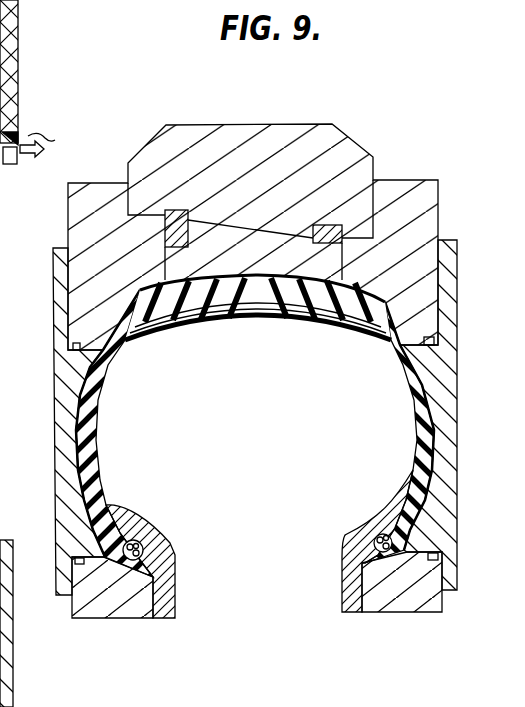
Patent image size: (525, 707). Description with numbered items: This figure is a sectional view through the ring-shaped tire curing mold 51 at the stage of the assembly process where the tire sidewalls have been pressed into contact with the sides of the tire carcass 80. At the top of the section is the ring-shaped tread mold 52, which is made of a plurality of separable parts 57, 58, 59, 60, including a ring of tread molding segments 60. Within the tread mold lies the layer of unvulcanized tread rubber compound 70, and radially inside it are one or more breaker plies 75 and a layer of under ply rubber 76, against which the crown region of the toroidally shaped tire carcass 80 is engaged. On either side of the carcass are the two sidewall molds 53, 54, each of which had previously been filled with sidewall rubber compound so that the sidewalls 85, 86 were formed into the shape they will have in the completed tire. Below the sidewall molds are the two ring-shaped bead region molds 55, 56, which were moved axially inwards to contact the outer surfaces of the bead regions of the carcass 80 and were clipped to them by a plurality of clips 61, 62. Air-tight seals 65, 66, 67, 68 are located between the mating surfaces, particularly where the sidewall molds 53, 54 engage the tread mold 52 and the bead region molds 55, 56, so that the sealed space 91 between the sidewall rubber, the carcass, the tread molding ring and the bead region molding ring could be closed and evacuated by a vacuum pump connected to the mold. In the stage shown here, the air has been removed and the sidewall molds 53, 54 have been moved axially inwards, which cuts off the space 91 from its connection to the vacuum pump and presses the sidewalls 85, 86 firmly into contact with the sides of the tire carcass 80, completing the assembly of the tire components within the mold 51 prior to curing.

The tire curing mold 51 is at (415, 166).
The ring-shaped tread mold 52 is at (447, 192).
The sidewall mold 53 is at (444, 382).
The sidewall mold 54 is at (63, 407).
The bead region mold 55 is at (410, 603).
The bead region mold 56 is at (122, 603).
The separable part of tread mold 57 is at (248, 140).
The separable part of tread mold 58 is at (80, 227).
The separable part of tread mold 59 is at (0, 580).
The tread molding segment 60 is at (312, 260).
The clip 61 is at (175, 567).
The clip 62 is at (345, 557).
The air-tight seal 65 is at (434, 346).
The air-tight seal 66 is at (18, 98).
The air-tight seal 67 is at (75, 562).
The air-tight seal 68 is at (82, 348).
The tread rubber compound 70 is at (150, 307).
The breaker ply 75 is at (300, 318).
The under ply rubber 76 is at (347, 318).
The tire carcass 80 is at (97, 445).
The sidewall 85 is at (77, 458).
The sidewall 86 is at (432, 417).
The sealed space 91 is at (18, 44).